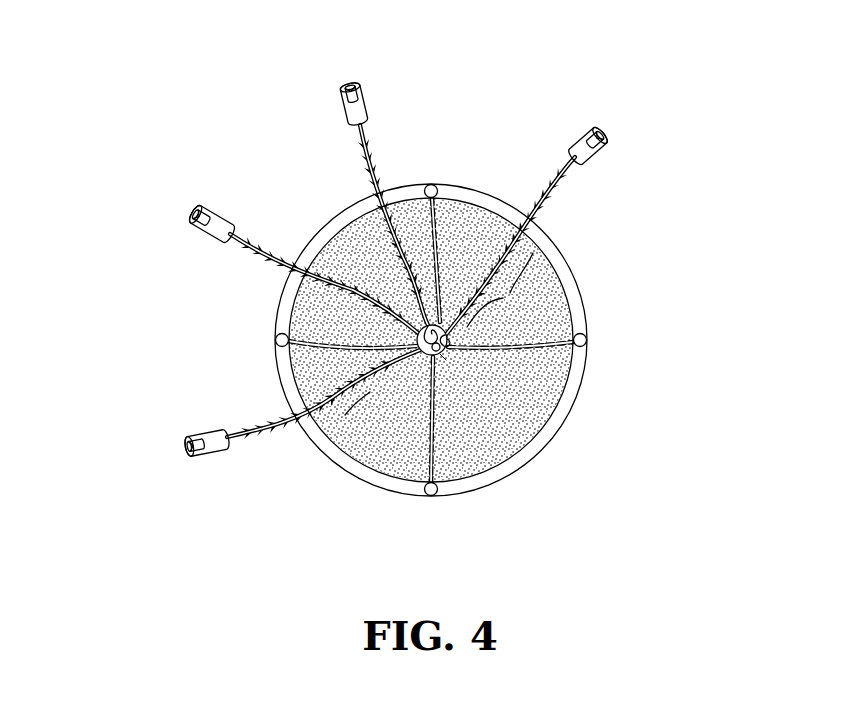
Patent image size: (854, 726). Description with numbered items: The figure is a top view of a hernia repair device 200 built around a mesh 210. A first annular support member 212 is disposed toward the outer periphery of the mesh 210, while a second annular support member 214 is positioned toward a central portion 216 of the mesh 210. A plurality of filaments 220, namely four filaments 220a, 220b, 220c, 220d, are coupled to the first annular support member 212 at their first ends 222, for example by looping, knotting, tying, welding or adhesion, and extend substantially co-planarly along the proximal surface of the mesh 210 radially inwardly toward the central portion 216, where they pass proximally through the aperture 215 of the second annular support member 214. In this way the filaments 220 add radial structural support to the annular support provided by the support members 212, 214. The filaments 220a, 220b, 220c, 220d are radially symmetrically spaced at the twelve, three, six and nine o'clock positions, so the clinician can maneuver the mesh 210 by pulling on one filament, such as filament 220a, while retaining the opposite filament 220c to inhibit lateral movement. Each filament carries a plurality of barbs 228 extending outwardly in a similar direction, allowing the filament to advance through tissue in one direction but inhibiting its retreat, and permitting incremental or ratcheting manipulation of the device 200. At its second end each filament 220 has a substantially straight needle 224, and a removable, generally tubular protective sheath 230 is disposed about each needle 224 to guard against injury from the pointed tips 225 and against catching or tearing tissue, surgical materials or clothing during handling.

The hernia repair device 200 is at (645, 55).
The mesh 210 is at (538, 363).
The first annular support member 212 is at (580, 323).
The second annular support member 214 is at (432, 358).
The aperture 215 is at (442, 353).
The central portion 216 is at (447, 368).
The filaments 220 is at (528, 197).
The filament 220a is at (368, 148).
The filament 220b is at (548, 197).
The filament 220c is at (320, 405).
The filament 220d is at (302, 277).
The first ends 222 is at (543, 338).
The needle 224 is at (343, 110).
The pointed tips 225 is at (348, 82).
The barbs 228 is at (503, 298).
The protective sheath 230 is at (368, 108).